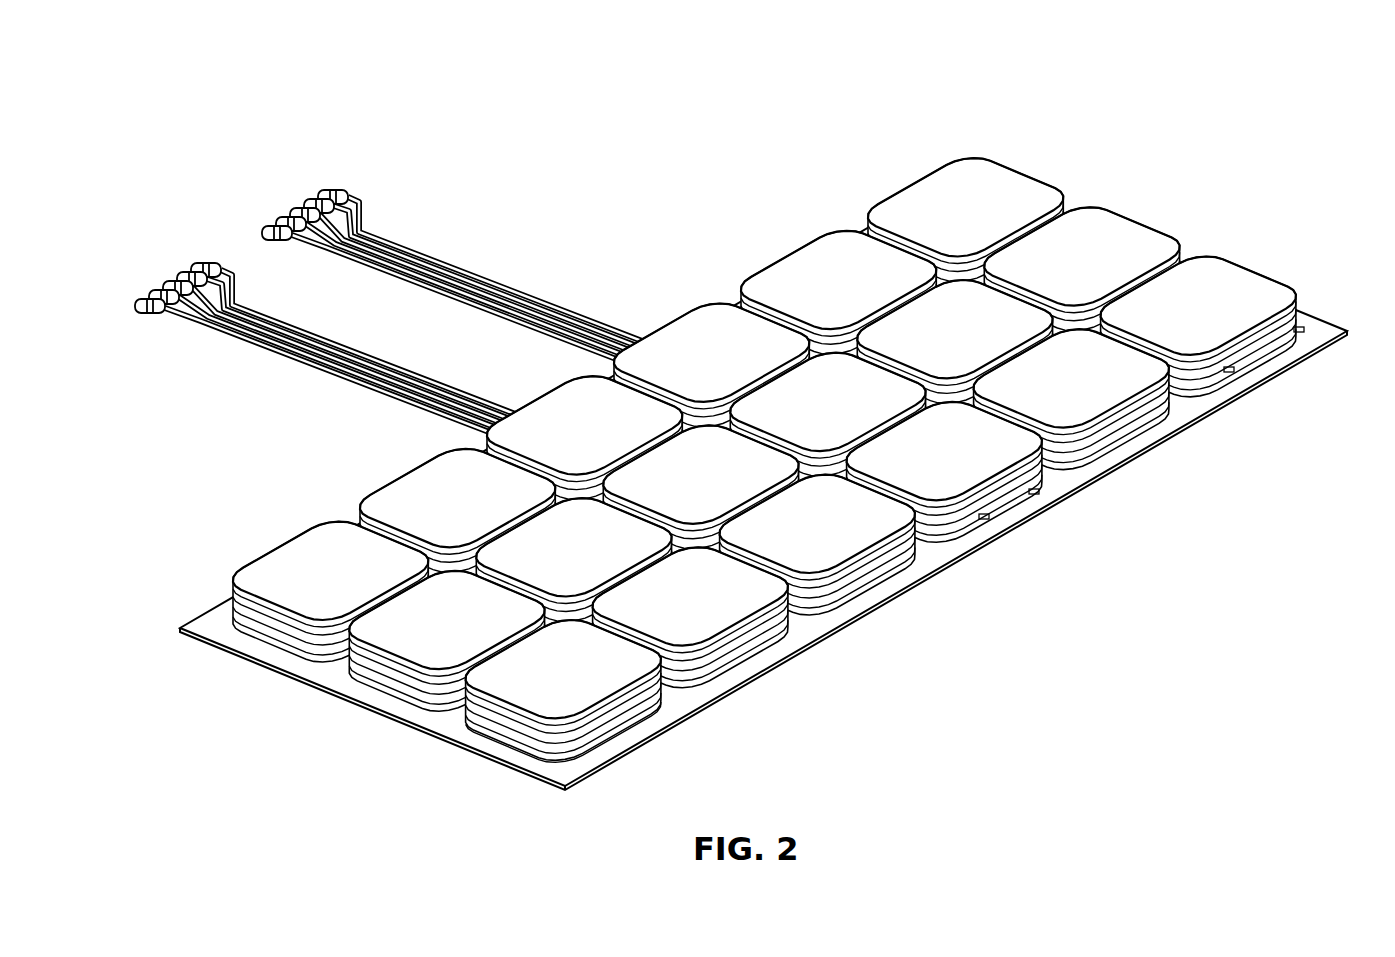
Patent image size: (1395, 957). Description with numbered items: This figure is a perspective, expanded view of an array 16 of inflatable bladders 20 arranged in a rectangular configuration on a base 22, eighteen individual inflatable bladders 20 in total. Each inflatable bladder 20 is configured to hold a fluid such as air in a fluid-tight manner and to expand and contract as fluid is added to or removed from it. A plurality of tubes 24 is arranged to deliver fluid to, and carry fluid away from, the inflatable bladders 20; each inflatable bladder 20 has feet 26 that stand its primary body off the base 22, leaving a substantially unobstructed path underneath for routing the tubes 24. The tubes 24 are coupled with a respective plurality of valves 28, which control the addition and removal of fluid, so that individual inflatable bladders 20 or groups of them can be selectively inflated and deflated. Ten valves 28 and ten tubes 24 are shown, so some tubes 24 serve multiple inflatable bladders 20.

The array 16 is at (590, 98).
The inflatable bladder 20 is at (935, 188).
The base 22 is at (502, 751).
The tube 24 is at (432, 248).
The feet 26 is at (1302, 331).
The valve 28 is at (130, 304).